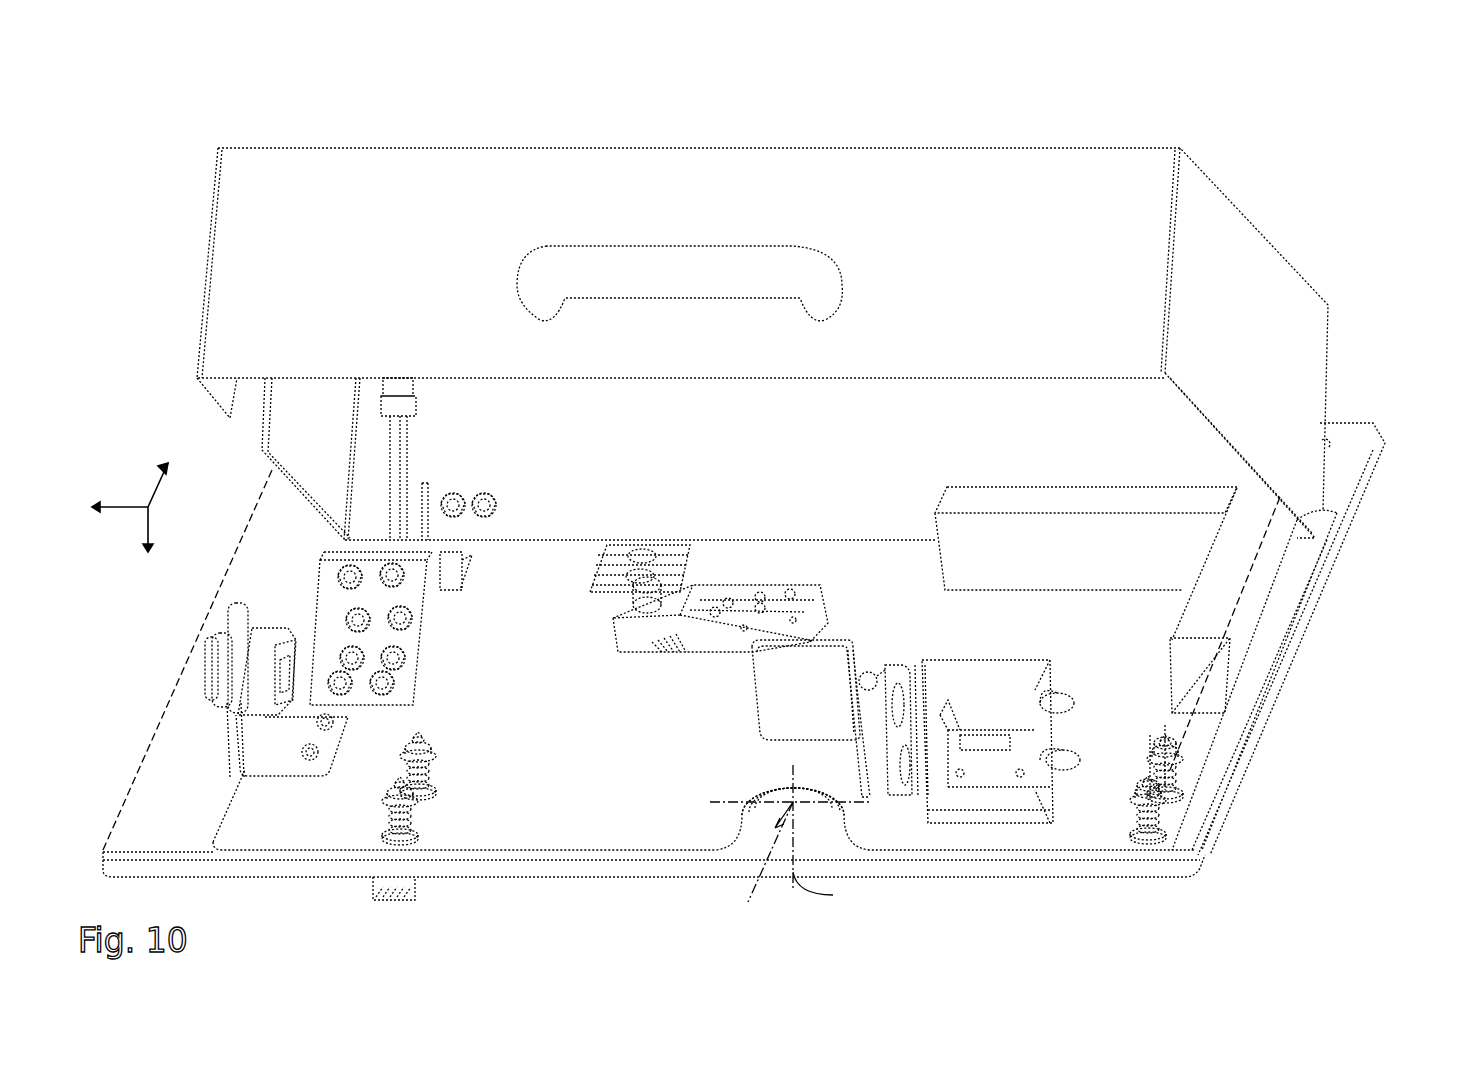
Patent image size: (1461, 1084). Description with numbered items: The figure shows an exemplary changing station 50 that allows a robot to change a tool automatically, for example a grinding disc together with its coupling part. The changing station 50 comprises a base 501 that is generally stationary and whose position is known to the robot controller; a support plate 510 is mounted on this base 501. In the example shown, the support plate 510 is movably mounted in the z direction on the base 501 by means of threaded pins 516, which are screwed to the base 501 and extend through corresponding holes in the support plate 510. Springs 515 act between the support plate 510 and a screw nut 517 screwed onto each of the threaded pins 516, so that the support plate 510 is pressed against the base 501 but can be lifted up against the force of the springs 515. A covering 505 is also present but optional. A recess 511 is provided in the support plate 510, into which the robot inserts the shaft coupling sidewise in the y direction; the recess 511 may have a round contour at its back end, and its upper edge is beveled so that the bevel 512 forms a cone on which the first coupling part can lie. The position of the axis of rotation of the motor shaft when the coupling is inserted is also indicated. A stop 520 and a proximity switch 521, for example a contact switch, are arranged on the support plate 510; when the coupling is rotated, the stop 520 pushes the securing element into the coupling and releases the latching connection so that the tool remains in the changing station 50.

The changing station 50 is at (345, 79).
The covering 505 is at (1275, 272).
The base 501 is at (1352, 462).
The support plate 510 is at (678, 830).
The stop 520 is at (773, 686).
The bevel 512 is at (790, 778).
The recess 511 is at (793, 802).
The proximity switch 521 is at (890, 785).
The threaded pins 516 is at (1163, 730).
The screw nut 517 is at (1147, 787).
The springs 515 is at (1163, 777).